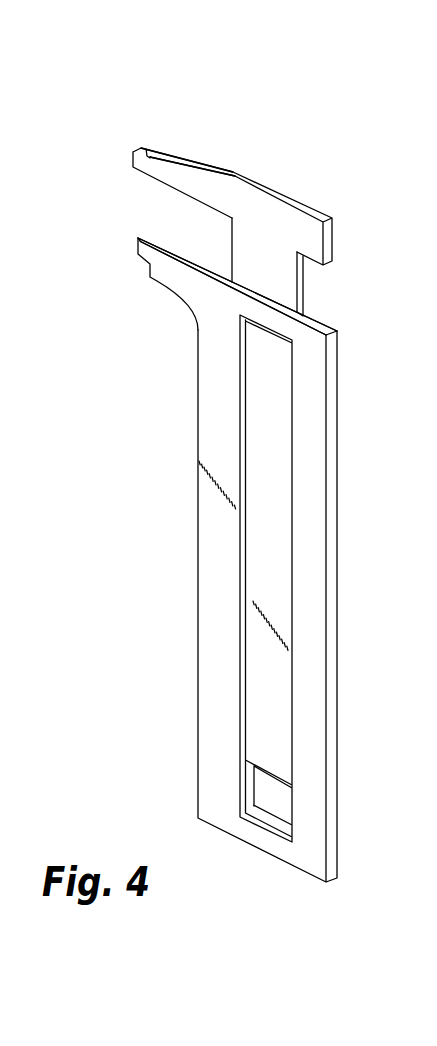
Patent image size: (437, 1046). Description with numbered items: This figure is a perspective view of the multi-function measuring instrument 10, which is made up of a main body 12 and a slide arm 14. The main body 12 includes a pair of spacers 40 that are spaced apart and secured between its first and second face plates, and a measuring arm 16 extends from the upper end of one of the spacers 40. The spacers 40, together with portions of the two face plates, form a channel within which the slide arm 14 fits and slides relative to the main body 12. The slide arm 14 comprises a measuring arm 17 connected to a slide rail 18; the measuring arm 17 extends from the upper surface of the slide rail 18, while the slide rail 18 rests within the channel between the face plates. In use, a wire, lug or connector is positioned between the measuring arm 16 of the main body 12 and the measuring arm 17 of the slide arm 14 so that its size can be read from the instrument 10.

The multi-function measuring instrument 10 is at (262, 456).
The main body 12 is at (346, 468).
The slide arm 14 is at (313, 204).
The measuring arm 16 is at (162, 272).
The measuring arm 17 is at (198, 168).
The slide rail 18 is at (284, 410).
The spacers 40 is at (217, 280).